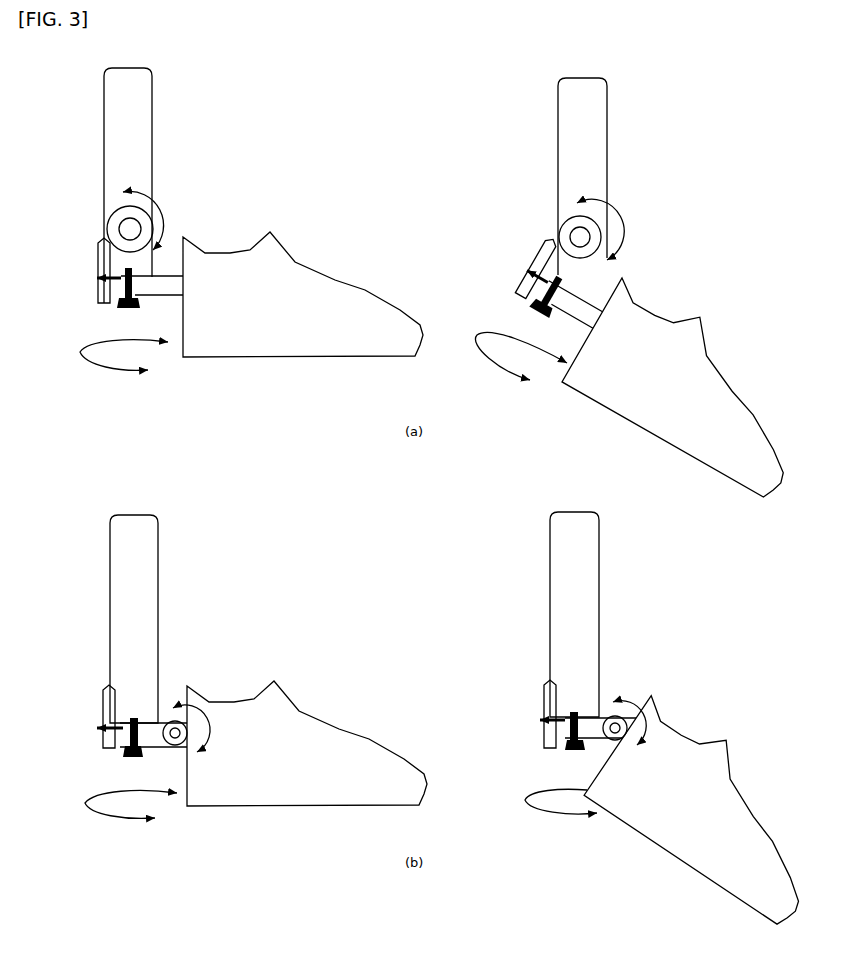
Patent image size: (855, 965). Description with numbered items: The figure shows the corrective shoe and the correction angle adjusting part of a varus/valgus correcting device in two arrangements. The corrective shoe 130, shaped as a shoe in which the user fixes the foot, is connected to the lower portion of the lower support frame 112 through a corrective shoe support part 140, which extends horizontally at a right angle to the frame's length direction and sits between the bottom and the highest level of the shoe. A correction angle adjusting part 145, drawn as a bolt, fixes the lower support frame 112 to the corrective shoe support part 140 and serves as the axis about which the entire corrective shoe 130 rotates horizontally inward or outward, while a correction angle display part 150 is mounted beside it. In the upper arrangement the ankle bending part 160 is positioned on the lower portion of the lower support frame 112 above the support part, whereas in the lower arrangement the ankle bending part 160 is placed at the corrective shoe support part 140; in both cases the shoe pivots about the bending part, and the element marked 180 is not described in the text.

The lower support frame 112 is at (140, 160).
The corrective shoe 130 is at (350, 300).
The corrective shoe support part 140 is at (167, 287).
The correction angle adjusting part 145 is at (122, 310).
The correction angle display part 150 is at (98, 238).
The ankle bending part 160 is at (198, 703).
The rotating joint 180 is at (143, 220).